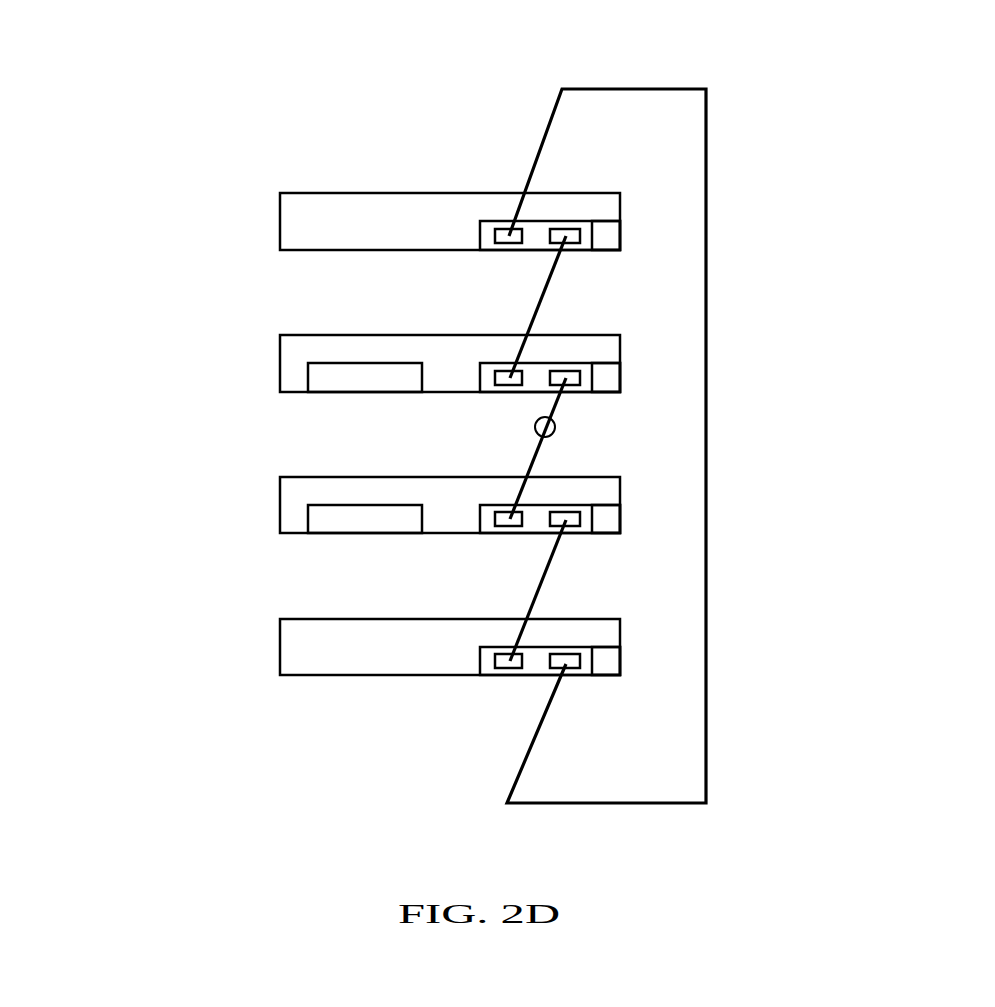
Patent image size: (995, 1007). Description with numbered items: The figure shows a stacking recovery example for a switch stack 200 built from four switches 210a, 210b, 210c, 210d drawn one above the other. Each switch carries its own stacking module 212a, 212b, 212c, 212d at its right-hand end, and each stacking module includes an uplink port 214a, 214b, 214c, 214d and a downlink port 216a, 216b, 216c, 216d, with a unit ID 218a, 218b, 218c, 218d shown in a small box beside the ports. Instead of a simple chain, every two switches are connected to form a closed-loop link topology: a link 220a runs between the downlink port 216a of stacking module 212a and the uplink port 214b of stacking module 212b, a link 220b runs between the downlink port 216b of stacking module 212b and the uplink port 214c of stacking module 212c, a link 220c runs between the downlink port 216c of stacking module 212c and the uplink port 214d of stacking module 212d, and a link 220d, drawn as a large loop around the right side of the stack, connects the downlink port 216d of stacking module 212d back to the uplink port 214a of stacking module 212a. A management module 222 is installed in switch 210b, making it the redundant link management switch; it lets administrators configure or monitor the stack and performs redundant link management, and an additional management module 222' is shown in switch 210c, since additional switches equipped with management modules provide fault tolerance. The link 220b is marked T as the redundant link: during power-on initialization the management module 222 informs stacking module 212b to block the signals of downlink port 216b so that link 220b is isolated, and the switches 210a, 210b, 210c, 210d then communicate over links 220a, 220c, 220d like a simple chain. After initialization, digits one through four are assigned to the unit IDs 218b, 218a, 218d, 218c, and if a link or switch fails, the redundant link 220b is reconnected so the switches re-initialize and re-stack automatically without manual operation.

The switch stack 200 is at (283, 82).
The switch 210a is at (280, 222).
The switch 210b is at (280, 364).
The switch 210c is at (280, 506).
The switch 210d is at (280, 648).
The stacking module 212a is at (482, 224).
The stacking module 212b is at (482, 375).
The stacking module 212c is at (482, 515).
The stacking module 212d is at (482, 658).
The uplink port 214a is at (503, 229).
The uplink port 214b is at (503, 371).
The uplink port 214c is at (503, 512).
The uplink port 214d is at (503, 654).
The downlink port 216a is at (572, 229).
The downlink port 216b is at (572, 371).
The downlink port 216c is at (572, 512).
The downlink port 216d is at (572, 654).
The unit ID 218a is at (605, 221).
The unit ID 218b is at (605, 363).
The unit ID 218c is at (605, 505).
The unit ID 218d is at (605, 647).
The link 220a is at (553, 272).
The link 220b is at (556, 405).
The link 220c is at (556, 545).
The link 220d is at (710, 241).
The management module 222 is at (238, 349).
The management module 222' is at (233, 490).
The redundant link T is at (536, 420).